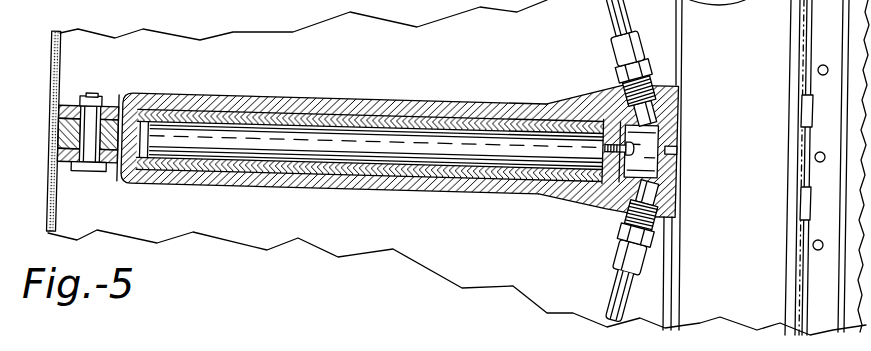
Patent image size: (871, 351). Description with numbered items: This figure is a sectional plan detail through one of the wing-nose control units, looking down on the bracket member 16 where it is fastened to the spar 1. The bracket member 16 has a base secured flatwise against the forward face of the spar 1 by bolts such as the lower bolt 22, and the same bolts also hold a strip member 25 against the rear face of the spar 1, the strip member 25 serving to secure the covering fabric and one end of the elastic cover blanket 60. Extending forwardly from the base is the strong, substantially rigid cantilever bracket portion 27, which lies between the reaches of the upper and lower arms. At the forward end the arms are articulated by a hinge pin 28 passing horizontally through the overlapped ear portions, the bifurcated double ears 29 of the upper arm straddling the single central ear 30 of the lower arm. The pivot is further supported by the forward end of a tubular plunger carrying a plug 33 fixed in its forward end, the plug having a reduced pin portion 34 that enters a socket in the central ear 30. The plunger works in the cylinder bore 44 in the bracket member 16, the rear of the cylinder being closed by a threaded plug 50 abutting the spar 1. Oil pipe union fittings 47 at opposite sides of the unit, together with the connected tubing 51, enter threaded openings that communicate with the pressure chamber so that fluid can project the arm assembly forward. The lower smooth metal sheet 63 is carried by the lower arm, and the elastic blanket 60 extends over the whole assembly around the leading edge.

The spar 1 is at (737, 287).
The bracket member 16 is at (676, 75).
The lower bolt 22 is at (803, 103).
The strip member 25 is at (810, 40).
The cantilever bracket portion 27 is at (440, 175).
The hinge pin 28 is at (92, 96).
The double ears 29 is at (57, 114).
The single ear 30 is at (63, 139).
The plug 33 is at (119, 112).
The reduced pin portion 34 is at (118, 164).
The cylinder bore 44 is at (360, 117).
The oil pipe union fitting 47 is at (614, 236).
The threaded plug 50 is at (676, 124).
The conduit 51 is at (618, 15).
The cover member or blanket 60 is at (50, 195).
The lower metal sheet 63 is at (233, 69).